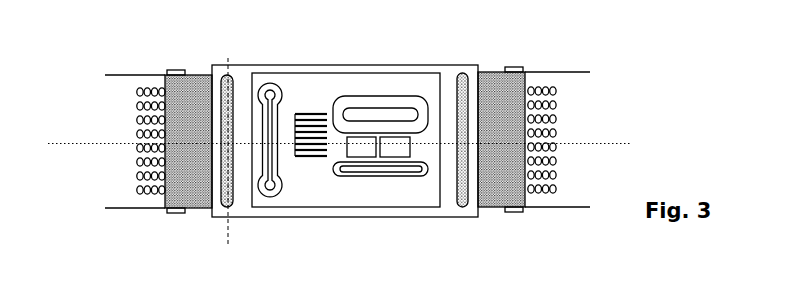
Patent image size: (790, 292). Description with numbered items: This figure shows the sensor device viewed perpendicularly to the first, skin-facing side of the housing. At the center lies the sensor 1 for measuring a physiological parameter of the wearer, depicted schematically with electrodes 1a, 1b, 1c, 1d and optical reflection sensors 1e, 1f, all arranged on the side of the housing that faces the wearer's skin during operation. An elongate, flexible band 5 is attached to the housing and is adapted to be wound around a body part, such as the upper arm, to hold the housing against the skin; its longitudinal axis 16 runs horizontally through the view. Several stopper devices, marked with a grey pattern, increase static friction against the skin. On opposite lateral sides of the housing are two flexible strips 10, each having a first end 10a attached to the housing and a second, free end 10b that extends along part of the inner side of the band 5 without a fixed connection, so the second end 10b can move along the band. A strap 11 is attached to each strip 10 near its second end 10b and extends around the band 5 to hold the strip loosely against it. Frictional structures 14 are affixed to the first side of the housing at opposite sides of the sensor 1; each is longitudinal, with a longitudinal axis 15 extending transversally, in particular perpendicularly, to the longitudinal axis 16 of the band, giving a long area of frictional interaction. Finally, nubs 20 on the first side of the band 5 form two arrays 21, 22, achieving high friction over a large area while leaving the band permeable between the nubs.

The sensor 1 is at (322, 183).
The electrode 1a is at (257, 118).
The electrode 1b is at (294, 93).
The electrode 1c is at (380, 84).
The electrode 1d is at (380, 202).
The optical reflection sensor 1e is at (347, 99).
The optical reflection sensor 1f is at (417, 99).
The band 5 is at (335, 155).
The flexible strip 10 is at (367, 108).
The first end 10a is at (300, 163).
The second end 10b is at (346, 154).
The strap 11 is at (341, 128).
The frictional structure 14 is at (344, 117).
The longitudinal axis 15 is at (206, 156).
The longitudinal axis 16 is at (337, 122).
The nub 20 is at (342, 140).
The array 21 is at (125, 87).
The array 22 is at (568, 97).